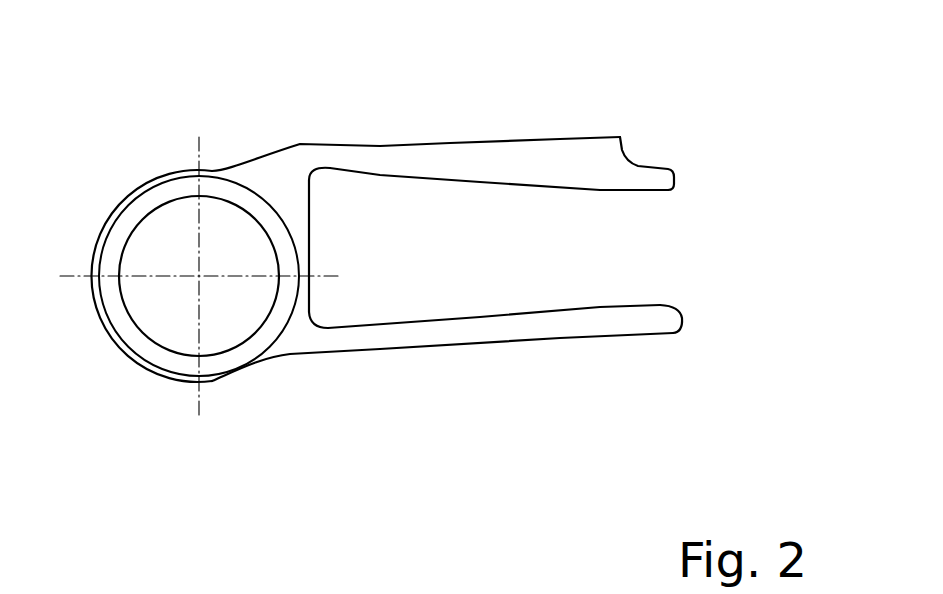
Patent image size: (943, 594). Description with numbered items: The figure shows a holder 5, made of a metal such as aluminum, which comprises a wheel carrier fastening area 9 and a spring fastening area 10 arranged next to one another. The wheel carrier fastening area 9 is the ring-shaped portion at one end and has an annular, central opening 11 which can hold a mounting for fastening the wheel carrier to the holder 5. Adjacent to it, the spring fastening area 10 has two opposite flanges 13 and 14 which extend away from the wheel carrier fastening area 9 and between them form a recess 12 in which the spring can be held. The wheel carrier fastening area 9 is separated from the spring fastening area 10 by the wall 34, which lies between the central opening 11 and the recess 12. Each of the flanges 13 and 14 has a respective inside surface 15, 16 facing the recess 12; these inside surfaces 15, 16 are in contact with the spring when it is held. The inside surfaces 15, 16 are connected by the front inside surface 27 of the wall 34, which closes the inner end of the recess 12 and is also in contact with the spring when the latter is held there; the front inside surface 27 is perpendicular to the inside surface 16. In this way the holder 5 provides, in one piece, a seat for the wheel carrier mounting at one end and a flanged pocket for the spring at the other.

The holder 5 is at (312, 112).
The wheel carrier fastening area 9 is at (173, 190).
The spring fastening area 10 is at (605, 158).
The central opening 11 is at (217, 320).
The recess 12 is at (588, 253).
The flange 13 is at (515, 328).
The flange 14 is at (523, 160).
The inside surface 15 is at (382, 175).
The inside surface 16 is at (477, 313).
The front inside surface 27 is at (317, 250).
The wall 34 is at (302, 247).